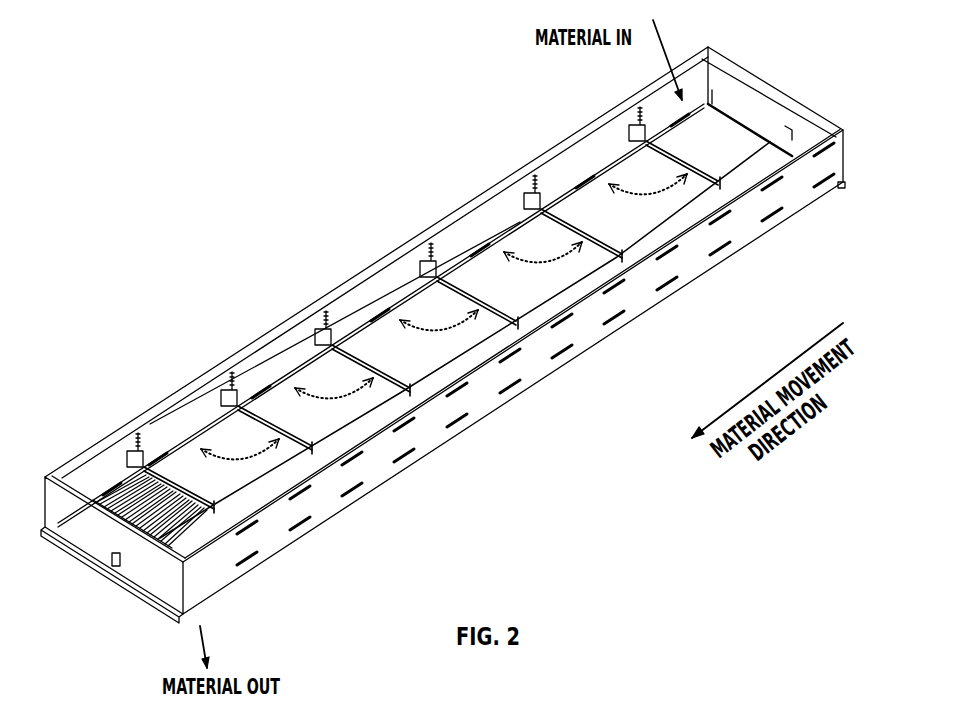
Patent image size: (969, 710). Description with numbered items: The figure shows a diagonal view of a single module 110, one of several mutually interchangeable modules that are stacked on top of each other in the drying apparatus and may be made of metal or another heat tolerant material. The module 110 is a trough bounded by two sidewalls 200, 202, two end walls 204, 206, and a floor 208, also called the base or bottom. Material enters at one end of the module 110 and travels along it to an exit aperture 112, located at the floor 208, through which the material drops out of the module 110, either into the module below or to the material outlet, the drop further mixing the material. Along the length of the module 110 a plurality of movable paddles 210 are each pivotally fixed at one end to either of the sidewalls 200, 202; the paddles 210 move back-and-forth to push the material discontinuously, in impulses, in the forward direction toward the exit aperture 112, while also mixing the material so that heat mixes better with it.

The module 110 is at (443, 336).
The exit aperture 112 is at (167, 520).
The sidewall 200 is at (683, 280).
The sidewall 202 is at (541, 166).
The end wall 204 is at (782, 98).
The end wall 206 is at (160, 566).
The floor 208 is at (317, 412).
The movable paddle 210 is at (690, 180).